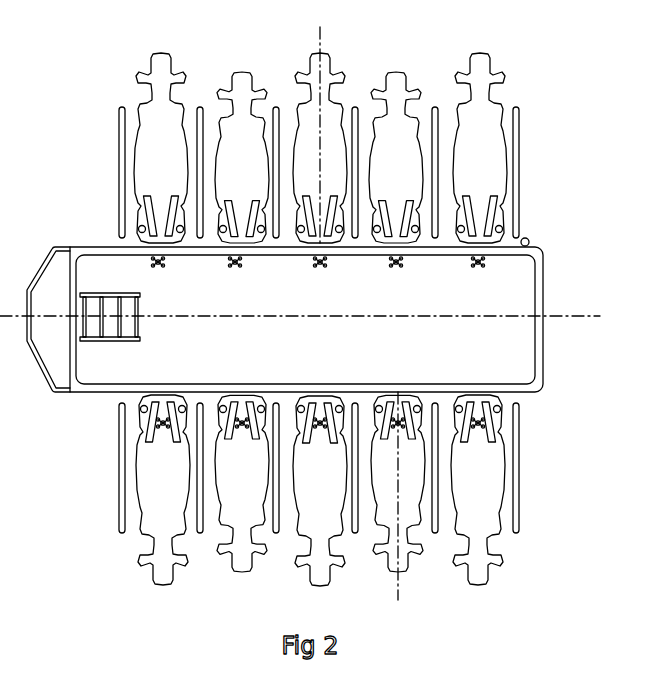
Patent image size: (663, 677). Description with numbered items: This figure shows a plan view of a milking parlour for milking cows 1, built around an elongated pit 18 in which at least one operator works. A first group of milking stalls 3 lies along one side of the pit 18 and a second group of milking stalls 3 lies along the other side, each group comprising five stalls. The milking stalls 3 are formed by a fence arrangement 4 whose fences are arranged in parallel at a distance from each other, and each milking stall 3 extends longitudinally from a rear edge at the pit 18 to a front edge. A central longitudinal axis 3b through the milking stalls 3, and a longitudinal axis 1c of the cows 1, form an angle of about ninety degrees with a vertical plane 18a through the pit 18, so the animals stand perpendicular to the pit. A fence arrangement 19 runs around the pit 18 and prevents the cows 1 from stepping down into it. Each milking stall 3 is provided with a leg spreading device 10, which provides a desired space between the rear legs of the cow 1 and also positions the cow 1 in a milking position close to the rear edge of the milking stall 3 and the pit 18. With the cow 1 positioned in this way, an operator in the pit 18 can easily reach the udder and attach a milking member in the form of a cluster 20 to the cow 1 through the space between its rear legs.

The cow 1 is at (490, 122).
The longitudinal axis of the cow 1c is at (400, 582).
The milking stall 3 is at (418, 232).
The central longitudinal axis of the milking stall 3b is at (322, 42).
The fence arrangement 4 is at (119, 160).
The leg spreading device 10 is at (155, 222).
The pit 18 is at (380, 348).
The vertical plane through the pit 18a is at (588, 315).
The fence arrangement around the pit 19 is at (108, 390).
The cluster 20 is at (160, 267).